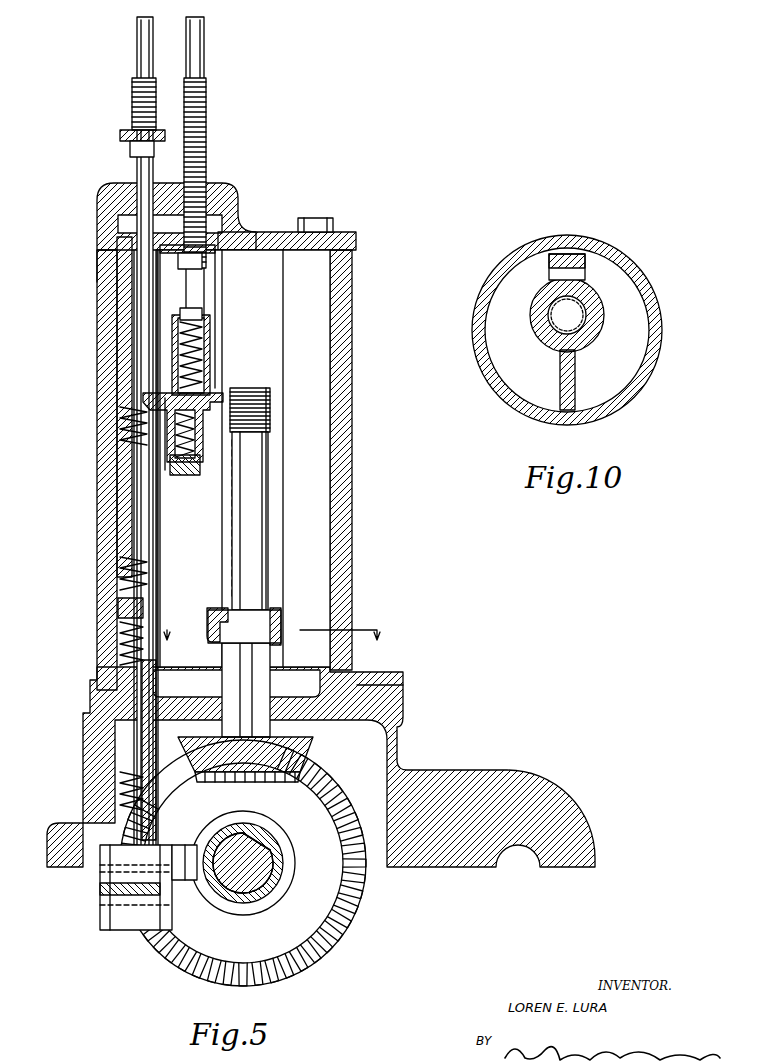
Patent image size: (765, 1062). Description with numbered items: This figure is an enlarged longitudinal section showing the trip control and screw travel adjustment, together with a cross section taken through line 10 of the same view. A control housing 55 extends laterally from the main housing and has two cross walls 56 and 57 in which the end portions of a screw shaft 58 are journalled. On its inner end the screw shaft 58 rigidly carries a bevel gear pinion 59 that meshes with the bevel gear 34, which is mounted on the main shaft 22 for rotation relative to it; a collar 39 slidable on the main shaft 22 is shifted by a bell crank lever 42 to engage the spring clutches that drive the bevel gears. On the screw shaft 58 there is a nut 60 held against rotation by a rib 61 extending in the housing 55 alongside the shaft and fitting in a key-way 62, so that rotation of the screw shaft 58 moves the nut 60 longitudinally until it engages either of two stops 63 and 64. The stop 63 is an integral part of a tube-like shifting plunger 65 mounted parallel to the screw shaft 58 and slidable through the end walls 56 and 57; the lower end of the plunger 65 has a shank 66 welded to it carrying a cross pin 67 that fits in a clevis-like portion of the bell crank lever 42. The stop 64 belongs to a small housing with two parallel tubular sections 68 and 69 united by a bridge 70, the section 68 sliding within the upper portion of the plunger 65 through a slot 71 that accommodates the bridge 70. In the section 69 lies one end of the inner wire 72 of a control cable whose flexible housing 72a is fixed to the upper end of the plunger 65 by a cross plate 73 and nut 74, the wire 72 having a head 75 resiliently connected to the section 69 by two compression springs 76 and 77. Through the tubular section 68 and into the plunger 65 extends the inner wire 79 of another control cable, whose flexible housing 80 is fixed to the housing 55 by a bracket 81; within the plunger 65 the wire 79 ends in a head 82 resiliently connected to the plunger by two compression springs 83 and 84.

In FIG. 5, the inner wire 72 is at (204, 55).
In FIG. 5, the flexible housing 72a is at (206, 112).
In FIG. 5, the flexible housing 80 is at (132, 90).
In FIG. 5, the bracket 81 is at (120, 146).
In FIG. 5, the inner wire 79 is at (137, 170).
In FIG. 5, the nut 74 is at (97, 218).
In FIG. 5, the cross plate 73 is at (228, 240).
In FIG. 5, the cross wall 57 is at (320, 300).
In FIG. 5, the tubular section 68 is at (125, 342).
In FIG. 5, the slot 71 is at (152, 356).
In FIG. 5, the compression spring 76 is at (200, 322).
In FIG. 5, the tubular section 69 is at (204, 360).
In FIG. 5, the head 75 is at (200, 385).
In FIG. 5, the compression spring 83 is at (120, 425).
In FIG. 5, the stop 64 is at (212, 412).
In FIG. 5, the screw shaft 58 is at (262, 443).
In FIG. 5, the bridge 70 is at (165, 455).
In FIG. 5, the compression spring 77 is at (205, 460).
In FIG. 5, the shifting plunger 65 is at (108, 505).
In FIG. 5, the rib 61 is at (278, 498).
In FIG. 10, the rib 61 is at (560, 380).
In FIG. 5, the control housing 55 is at (350, 598).
In FIG. 5, the stop 63 is at (196, 610).
In FIG. 10, the stop 63 is at (585, 265).
In FIG. 5, the head 82 is at (118, 610).
In FIG. 5, the nut 60 is at (275, 616).
In FIG. 5, the key-way 62 is at (281, 632).
In FIG. 10, the key-way 62 is at (585, 352).
In FIG. 5, the line 10— 10 is at (275, 646).
In FIG. 5, the compression spring 84 is at (118, 660).
In FIG. 5, the cross wall 56 is at (320, 705).
In FIG. 5, the bevel gear pinion 59 is at (305, 752).
In FIG. 5, the shank 66 is at (118, 818).
In FIG. 5, the collar 39 is at (262, 838).
In FIG. 5, the main shaft 22 is at (262, 858).
In FIG. 5, the cross pin 67 is at (100, 888).
In FIG. 5, the bell crank lever 42 is at (103, 912).
In FIG. 5, the bevel gear 34 is at (300, 975).